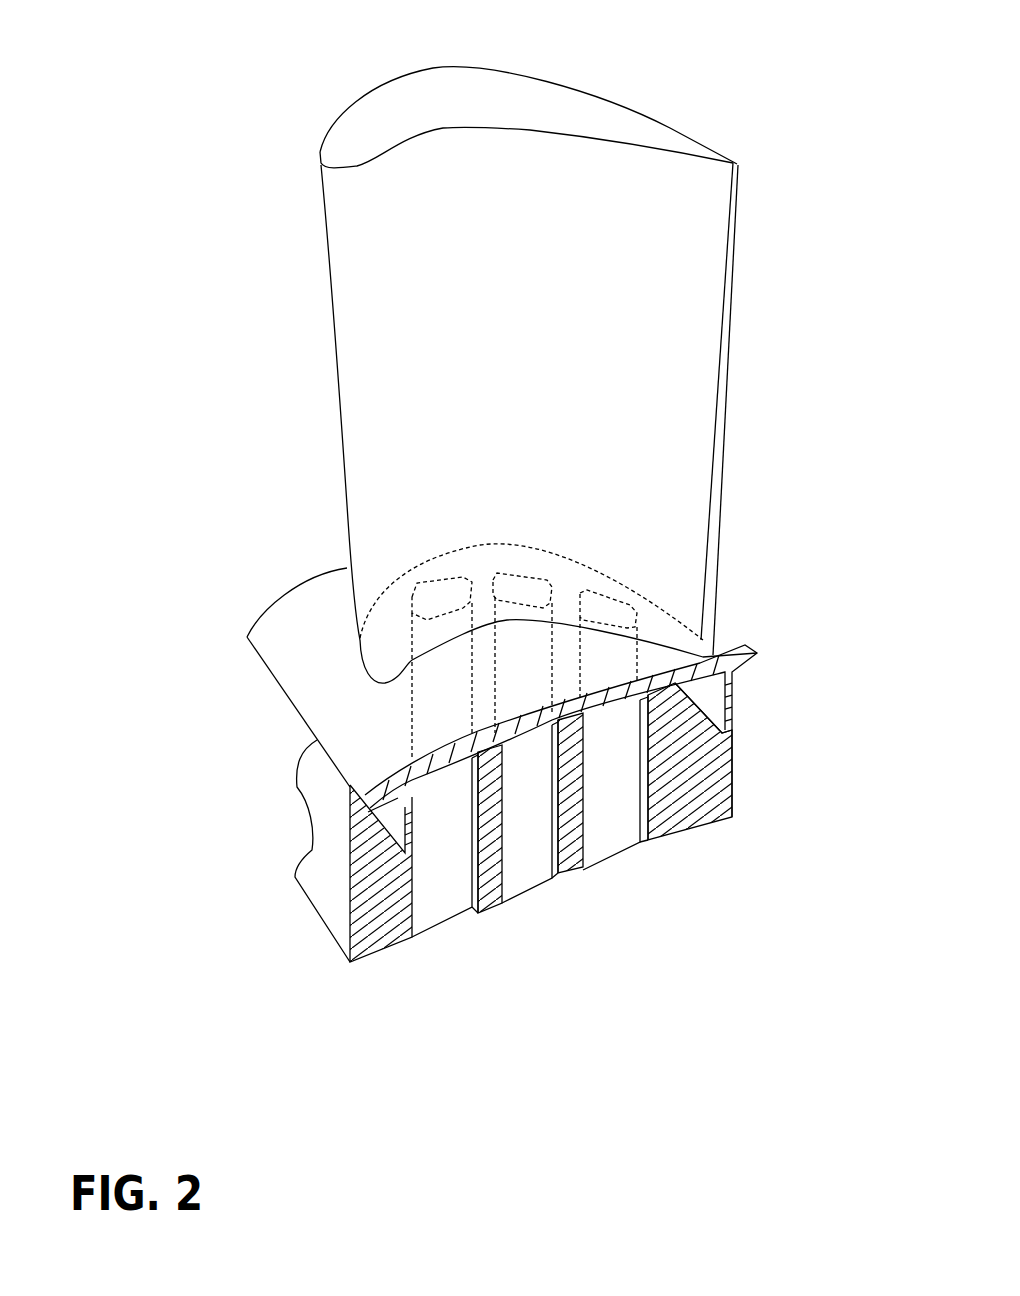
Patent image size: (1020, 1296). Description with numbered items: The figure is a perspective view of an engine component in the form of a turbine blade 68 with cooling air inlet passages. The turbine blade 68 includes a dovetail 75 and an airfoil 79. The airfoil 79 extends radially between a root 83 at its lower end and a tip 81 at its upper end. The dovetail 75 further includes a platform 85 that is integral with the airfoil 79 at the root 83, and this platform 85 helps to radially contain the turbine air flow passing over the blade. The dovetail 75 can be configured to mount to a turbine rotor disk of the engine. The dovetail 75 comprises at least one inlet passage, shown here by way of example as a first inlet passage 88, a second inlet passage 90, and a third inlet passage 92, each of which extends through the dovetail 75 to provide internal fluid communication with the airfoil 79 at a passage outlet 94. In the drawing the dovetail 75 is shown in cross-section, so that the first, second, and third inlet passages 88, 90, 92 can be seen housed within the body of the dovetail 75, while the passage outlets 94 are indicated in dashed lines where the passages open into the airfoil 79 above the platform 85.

The turbine blade 68 is at (177, 171).
The tip 81 is at (413, 108).
The airfoil 79 is at (334, 452).
The root 83 is at (663, 640).
The platform 85 is at (313, 672).
The dovetail 75 is at (335, 838).
The first inlet passage 88 is at (449, 945).
The second inlet passage 90 is at (533, 922).
The third inlet passage 92 is at (610, 890).
The passage outlet 94 is at (430, 580).